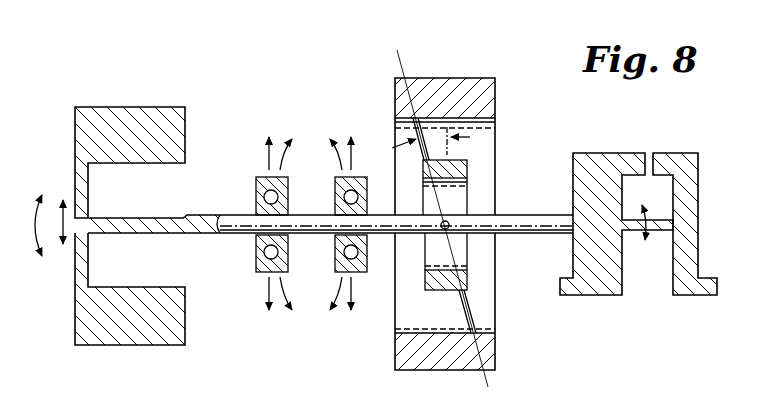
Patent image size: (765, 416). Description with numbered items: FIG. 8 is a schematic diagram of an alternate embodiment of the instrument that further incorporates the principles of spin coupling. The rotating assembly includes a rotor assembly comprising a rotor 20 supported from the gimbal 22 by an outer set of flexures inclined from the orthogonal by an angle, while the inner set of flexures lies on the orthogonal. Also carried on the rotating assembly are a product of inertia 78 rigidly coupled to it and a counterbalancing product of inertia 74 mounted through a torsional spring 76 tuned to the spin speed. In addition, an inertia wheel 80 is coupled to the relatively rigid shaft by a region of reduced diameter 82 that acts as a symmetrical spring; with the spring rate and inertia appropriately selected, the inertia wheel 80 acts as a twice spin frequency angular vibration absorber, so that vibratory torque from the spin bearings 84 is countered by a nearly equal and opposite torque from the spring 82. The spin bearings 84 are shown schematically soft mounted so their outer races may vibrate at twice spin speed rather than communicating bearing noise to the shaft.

The rotor 20 is at (467, 80).
The gimbal 22 is at (425, 288).
The counterbalancing product of inertia 74 is at (680, 155).
The torsional spring 76 is at (660, 232).
The product of inertia 78 is at (602, 157).
The inertia wheel 80 is at (137, 112).
The region of reduced diameter 82 is at (150, 220).
The spin bearings 84 is at (257, 190).